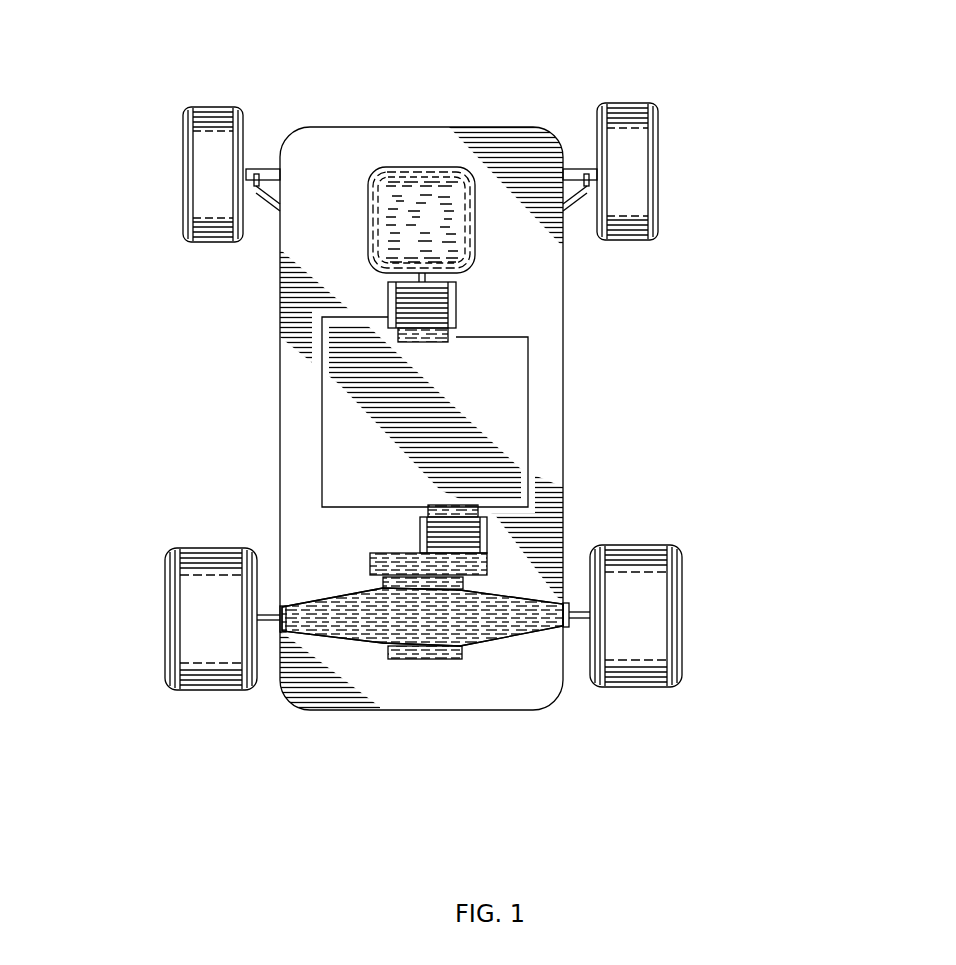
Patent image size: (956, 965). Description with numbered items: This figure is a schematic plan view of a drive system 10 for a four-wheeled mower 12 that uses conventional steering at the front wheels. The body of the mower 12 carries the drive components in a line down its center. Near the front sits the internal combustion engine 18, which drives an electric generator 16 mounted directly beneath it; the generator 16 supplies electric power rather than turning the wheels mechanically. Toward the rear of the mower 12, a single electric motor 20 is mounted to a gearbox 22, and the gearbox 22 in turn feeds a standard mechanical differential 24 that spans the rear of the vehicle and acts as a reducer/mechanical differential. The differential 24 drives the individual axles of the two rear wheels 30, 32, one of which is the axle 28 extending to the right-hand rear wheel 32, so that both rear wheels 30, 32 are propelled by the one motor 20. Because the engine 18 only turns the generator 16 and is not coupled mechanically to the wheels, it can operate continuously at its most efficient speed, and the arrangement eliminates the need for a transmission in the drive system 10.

The drive system 10 is at (450, 411).
The four-wheeled mower 12 is at (401, 358).
The electric generator 16 is at (630, 279).
The internal combustion engine 18 is at (473, 146).
The motor 20 is at (269, 499).
The gearbox 22 is at (272, 532).
The standard mechanical differential 24 is at (420, 647).
The axle 28 is at (577, 620).
The rear wheel 30 is at (142, 658).
The rear wheel 32 is at (718, 649).